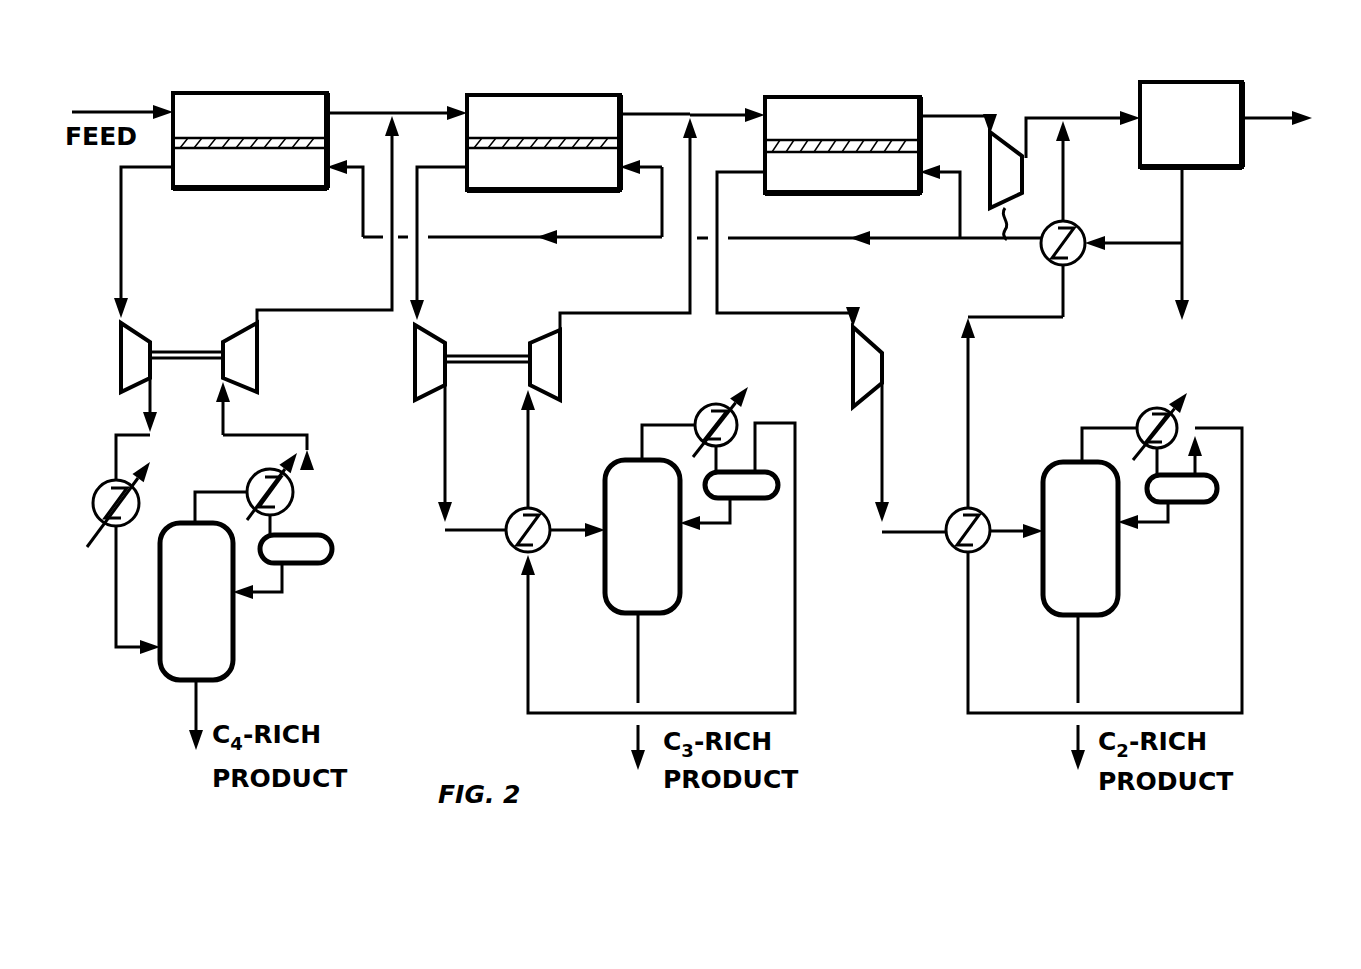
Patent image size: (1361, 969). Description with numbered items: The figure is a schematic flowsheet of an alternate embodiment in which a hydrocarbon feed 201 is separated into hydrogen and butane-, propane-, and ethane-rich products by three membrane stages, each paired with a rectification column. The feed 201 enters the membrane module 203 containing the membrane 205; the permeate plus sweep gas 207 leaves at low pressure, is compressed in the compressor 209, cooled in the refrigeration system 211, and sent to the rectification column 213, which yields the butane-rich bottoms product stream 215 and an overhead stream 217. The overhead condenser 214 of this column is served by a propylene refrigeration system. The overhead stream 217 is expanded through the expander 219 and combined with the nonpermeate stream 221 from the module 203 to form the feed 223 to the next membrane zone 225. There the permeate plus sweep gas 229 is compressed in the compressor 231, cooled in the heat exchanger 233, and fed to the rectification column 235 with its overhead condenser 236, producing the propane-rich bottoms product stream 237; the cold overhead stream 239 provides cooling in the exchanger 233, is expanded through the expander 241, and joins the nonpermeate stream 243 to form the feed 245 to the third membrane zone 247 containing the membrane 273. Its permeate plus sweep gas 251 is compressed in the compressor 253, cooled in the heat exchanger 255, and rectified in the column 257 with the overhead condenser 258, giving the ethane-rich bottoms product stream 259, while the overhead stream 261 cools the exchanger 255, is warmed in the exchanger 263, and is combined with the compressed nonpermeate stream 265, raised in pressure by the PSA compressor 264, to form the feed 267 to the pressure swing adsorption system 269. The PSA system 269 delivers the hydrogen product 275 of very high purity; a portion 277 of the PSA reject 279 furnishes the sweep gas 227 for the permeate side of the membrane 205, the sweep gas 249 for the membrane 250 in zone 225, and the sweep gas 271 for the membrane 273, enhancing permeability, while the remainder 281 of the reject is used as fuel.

The feed 201 is at (122, 110).
The membrane module 203 is at (290, 93).
The membrane 205 is at (275, 150).
The permeate plus sweep gas 207 is at (122, 260).
The compressor 209 is at (143, 332).
The refrigeration system 211 is at (146, 492).
The rectification column 213 is at (220, 618).
The overhead condenser 214 is at (295, 492).
The butane-rich bottoms product stream 215 is at (197, 706).
The overhead stream 217 is at (290, 432).
The expander 219 is at (257, 352).
The nonpermeate stream 221 is at (360, 112).
The feed 223 is at (428, 112).
The membrane zone 225 is at (598, 95).
The sweep gas 227 is at (630, 239).
The permeate plus sweep gas 229 is at (418, 272).
The compressor 231 is at (415, 368).
The heat exchanger 233 is at (510, 554).
The rectification column 235 is at (668, 548).
The overhead condenser 236 is at (718, 405).
The propane-rich bottoms product stream 237 is at (640, 656).
The overhead stream 239 is at (797, 556).
The expander 241 is at (562, 352).
The nonpermeate stream 243 is at (657, 114).
The feed 245 is at (725, 114).
The membrane zone 247 is at (826, 97).
The sweep gas 249 is at (662, 214).
The membrane 250 is at (585, 150).
The permeate plus sweep gas 251 is at (795, 313).
The compressor 253 is at (853, 358).
The heat exchanger 255 is at (956, 554).
The rectification column 257 is at (1110, 546).
The overhead condenser 258 is at (1156, 406).
The ethane-rich bottoms product stream 259 is at (1080, 665).
The overhead stream 261 is at (1238, 427).
The exchanger 263 is at (1077, 264).
The PSA compressor 264 is at (1005, 240).
The compressed nonpermeate stream 265 is at (1034, 110).
The feed 267 is at (1094, 116).
The pressure swing adsorption (PSA) system 269 is at (1180, 82).
The sweep gas 271 is at (958, 215).
The membrane 273 is at (882, 155).
The hydrogen product 275 is at (1268, 117).
The portion of PSA reject 277 is at (1108, 240).
The PSA reject 279 is at (1183, 205).
The remainder of the reject 281 is at (1183, 283).